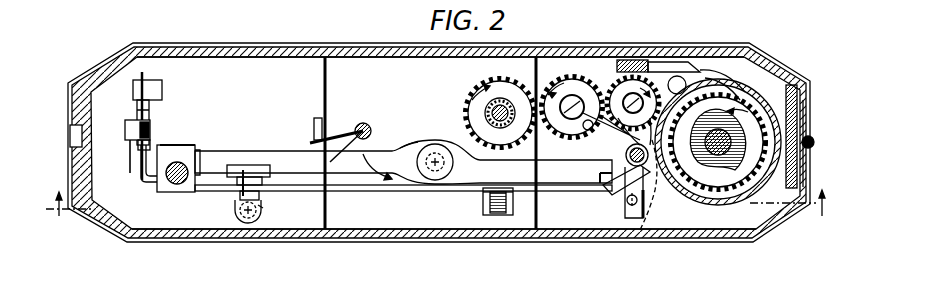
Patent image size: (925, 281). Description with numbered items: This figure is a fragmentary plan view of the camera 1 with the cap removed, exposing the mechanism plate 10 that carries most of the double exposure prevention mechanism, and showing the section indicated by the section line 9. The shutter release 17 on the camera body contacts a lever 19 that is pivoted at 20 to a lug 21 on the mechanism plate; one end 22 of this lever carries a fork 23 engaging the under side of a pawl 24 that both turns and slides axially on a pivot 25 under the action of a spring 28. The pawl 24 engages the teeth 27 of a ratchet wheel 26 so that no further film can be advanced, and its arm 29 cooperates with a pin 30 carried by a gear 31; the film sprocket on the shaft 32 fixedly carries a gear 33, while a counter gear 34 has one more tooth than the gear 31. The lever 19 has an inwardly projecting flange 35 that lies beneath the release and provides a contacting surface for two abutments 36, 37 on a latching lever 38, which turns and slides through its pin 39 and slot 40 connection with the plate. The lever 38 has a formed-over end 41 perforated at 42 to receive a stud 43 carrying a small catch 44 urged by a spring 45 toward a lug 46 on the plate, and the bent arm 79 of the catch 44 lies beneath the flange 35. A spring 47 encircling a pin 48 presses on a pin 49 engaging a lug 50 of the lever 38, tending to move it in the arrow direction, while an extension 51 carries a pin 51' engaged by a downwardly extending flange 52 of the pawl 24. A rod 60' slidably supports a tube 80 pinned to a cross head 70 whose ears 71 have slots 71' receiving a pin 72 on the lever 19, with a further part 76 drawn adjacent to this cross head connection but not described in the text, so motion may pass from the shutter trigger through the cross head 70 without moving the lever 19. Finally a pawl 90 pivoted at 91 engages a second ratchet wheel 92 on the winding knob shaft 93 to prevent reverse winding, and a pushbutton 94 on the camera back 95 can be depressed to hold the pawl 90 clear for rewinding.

The housing 1 is at (89, 222).
The section line 9 is at (438, 212).
The mechanism plate 10 is at (394, 143).
The shutter release 17 is at (177, 190).
The lever 19 is at (407, 192).
The pivot 20 is at (486, 196).
The lug 21 is at (504, 216).
The end of lever 22 is at (683, 178).
The fork 23 is at (590, 131).
The pawl 24 is at (620, 104).
The pivot 25 is at (610, 188).
The ratchet wheel 26 is at (766, 115).
The teeth of ratchet 27 is at (735, 200).
The spring 28 is at (647, 167).
The arm of pawl 29 is at (604, 118).
The pin 30 is at (585, 184).
The gear 31 is at (554, 74).
The shaft 32 is at (628, 78).
The gear 33 is at (674, 62).
The gear 34 is at (468, 96).
The flange 35 is at (188, 160).
The abutment 36 is at (152, 182).
The abutment 37 is at (178, 146).
The latching lever 38 is at (291, 151).
The pin 39 is at (436, 145).
The slot 40 is at (416, 143).
The formed-over end 41 is at (150, 128).
The perforation 42 is at (150, 142).
The stud 43 is at (130, 122).
The catch 44 is at (145, 76).
The spring 45 is at (130, 155).
The lug 46 is at (158, 85).
The spring 47 is at (334, 136).
The pin 48 is at (367, 124).
The pin 49 is at (318, 118).
The lug 50 is at (367, 169).
The extension 51 is at (616, 222).
The pin 51' is at (629, 235).
The flange 52 is at (650, 222).
The rod 60' is at (238, 232).
The cross head 70 is at (261, 212).
The ear 71 is at (271, 205).
The slot 71' is at (262, 146).
The pin 72 is at (237, 165).
The bracket 76 is at (254, 178).
The bent arm 79 is at (172, 230).
The tube 80 is at (238, 210).
The pawl 90 is at (718, 98).
The pivot 91 is at (685, 80).
The second ratchet wheel 92 is at (756, 128).
The winding knob shaft 93 is at (768, 212).
The pushbutton 94 is at (646, 60).
The camera back 95 is at (378, 47).